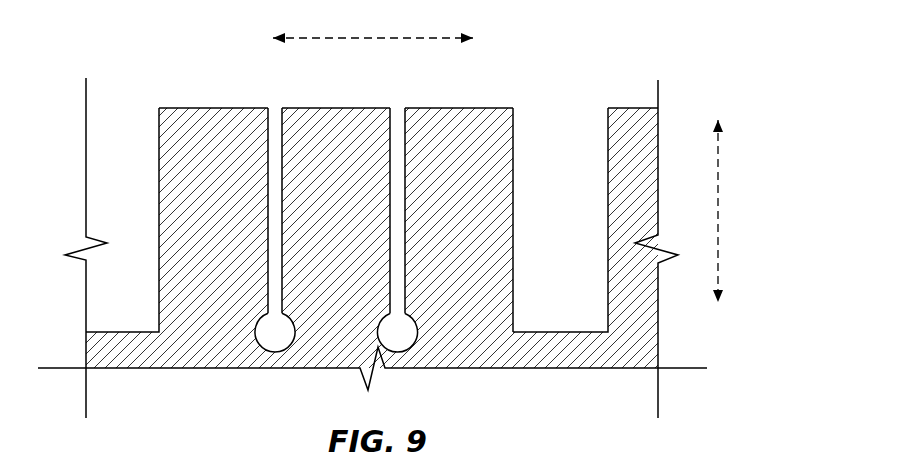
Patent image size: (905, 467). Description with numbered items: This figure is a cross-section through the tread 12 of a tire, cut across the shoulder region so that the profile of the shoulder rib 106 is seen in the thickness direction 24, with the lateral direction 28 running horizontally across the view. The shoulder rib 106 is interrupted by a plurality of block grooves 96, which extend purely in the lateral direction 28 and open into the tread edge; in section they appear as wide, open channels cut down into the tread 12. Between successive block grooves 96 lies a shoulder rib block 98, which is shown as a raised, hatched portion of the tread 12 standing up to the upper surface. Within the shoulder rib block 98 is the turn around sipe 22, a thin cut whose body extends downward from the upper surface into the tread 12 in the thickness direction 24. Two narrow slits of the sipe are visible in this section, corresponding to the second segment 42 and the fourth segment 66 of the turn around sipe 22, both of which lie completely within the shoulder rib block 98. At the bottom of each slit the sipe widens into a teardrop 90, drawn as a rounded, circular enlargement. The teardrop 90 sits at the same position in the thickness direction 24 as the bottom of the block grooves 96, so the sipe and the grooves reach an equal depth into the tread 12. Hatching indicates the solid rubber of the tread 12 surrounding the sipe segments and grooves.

The tread 12 is at (700, 72).
The turn around sipe 22 is at (397, 217).
The thickness direction 24 is at (718, 212).
The lateral direction 28 is at (372, 40).
The second segment 42 is at (278, 168).
The fourth segment 66 is at (397, 168).
The teardrop 90 is at (265, 318).
The block grooves 96 is at (128, 123).
The shoulder rib block 98 is at (441, 122).
The shoulder rib 106 is at (506, 120).